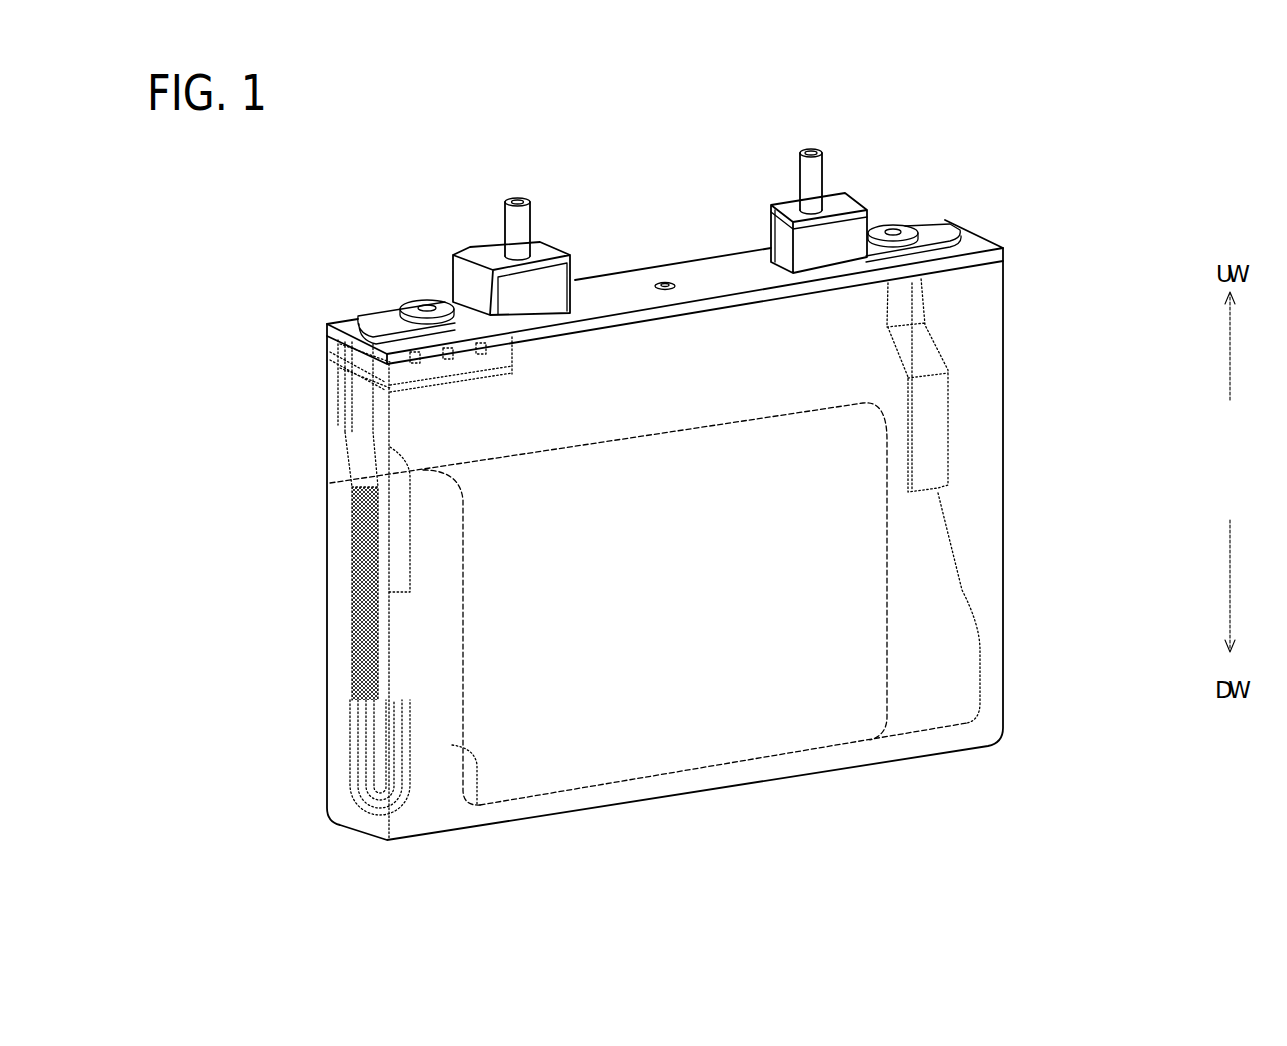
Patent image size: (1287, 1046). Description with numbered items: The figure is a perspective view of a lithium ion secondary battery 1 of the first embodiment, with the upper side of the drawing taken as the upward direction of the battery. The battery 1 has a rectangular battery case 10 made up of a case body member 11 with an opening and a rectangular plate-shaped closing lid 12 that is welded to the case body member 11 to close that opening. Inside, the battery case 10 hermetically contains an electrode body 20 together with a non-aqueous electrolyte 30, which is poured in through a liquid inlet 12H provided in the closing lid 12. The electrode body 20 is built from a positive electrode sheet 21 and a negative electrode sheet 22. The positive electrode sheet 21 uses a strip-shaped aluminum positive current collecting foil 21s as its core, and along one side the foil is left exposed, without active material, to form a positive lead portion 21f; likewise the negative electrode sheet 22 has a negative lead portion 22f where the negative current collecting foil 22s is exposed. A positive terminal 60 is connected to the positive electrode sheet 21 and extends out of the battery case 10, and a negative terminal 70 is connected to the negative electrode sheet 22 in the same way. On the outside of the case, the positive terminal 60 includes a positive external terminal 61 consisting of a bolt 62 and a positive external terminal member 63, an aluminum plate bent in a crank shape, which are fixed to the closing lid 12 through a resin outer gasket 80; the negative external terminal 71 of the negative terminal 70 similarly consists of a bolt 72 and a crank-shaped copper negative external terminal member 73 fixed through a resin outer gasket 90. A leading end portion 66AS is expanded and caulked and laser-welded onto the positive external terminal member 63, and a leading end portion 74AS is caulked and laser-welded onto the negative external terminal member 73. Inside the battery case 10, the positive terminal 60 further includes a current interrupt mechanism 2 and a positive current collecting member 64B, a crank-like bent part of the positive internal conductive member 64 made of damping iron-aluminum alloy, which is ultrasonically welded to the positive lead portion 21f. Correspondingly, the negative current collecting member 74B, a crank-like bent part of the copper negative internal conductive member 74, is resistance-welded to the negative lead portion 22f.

The lithium ion secondary battery 1 is at (662, 492).
The current interrupt mechanism 2 is at (425, 396).
The battery case 10 is at (736, 521).
The case body member 11 is at (995, 320).
The closing lid 12 is at (716, 283).
The liquid inlet 12H is at (665, 281).
The electrode body 20 is at (669, 639).
The positive electrode sheet 21 is at (370, 755).
The positive lead portion 21f is at (350, 673).
The positive current collecting foil 21s is at (323, 725).
The negative electrode sheet 22 is at (1016, 648).
The negative lead portion 22f is at (935, 607).
The negative current collecting foil 22s is at (1019, 608).
The non-aqueous electrolyte 30 is at (807, 763).
The positive terminal 60 is at (456, 233).
The positive external terminal 61 is at (506, 218).
The bolt 62 is at (510, 205).
The positive external terminal member 63 is at (482, 252).
The positive internal conductive member 64 is at (323, 521).
The positive current collecting member 64B is at (350, 522).
The leading end portion 66AS is at (412, 302).
The negative terminal 70 is at (905, 301).
The negative external terminal 71 is at (825, 191).
The bolt 72 is at (832, 178).
The negative external terminal member 73 is at (847, 203).
The negative internal conductive member 74 is at (983, 335).
The leading end portion 74AS is at (940, 220).
The negative current collecting member 74B is at (930, 425).
The outer gasket 80 is at (553, 281).
The outer gasket 90 is at (779, 234).